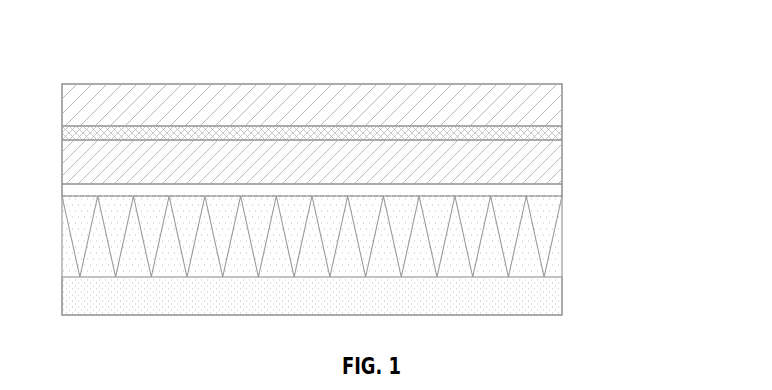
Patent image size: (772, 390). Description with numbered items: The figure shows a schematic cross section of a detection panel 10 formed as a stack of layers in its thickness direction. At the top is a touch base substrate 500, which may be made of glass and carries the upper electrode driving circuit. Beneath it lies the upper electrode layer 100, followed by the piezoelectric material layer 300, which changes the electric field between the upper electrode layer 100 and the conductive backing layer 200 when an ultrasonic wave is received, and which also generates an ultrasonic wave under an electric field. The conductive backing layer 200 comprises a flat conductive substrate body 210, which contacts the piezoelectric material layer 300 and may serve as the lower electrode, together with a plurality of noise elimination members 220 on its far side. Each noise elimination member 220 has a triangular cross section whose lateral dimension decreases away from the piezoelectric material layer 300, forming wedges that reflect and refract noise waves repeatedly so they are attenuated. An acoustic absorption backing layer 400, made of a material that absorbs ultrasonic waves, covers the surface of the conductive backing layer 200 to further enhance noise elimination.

The detection panel 10 is at (95, 68).
The touch base substrate 500 is at (562, 107).
The upper electrode layer 100 is at (562, 133).
The piezoelectric material layer 300 is at (562, 166).
The conductive backing layer 200 is at (390, 227).
The conductive substrate body 210 is at (562, 194).
The noise elimination members 220 is at (562, 233).
The acoustic absorption backing layer 400 is at (562, 277).